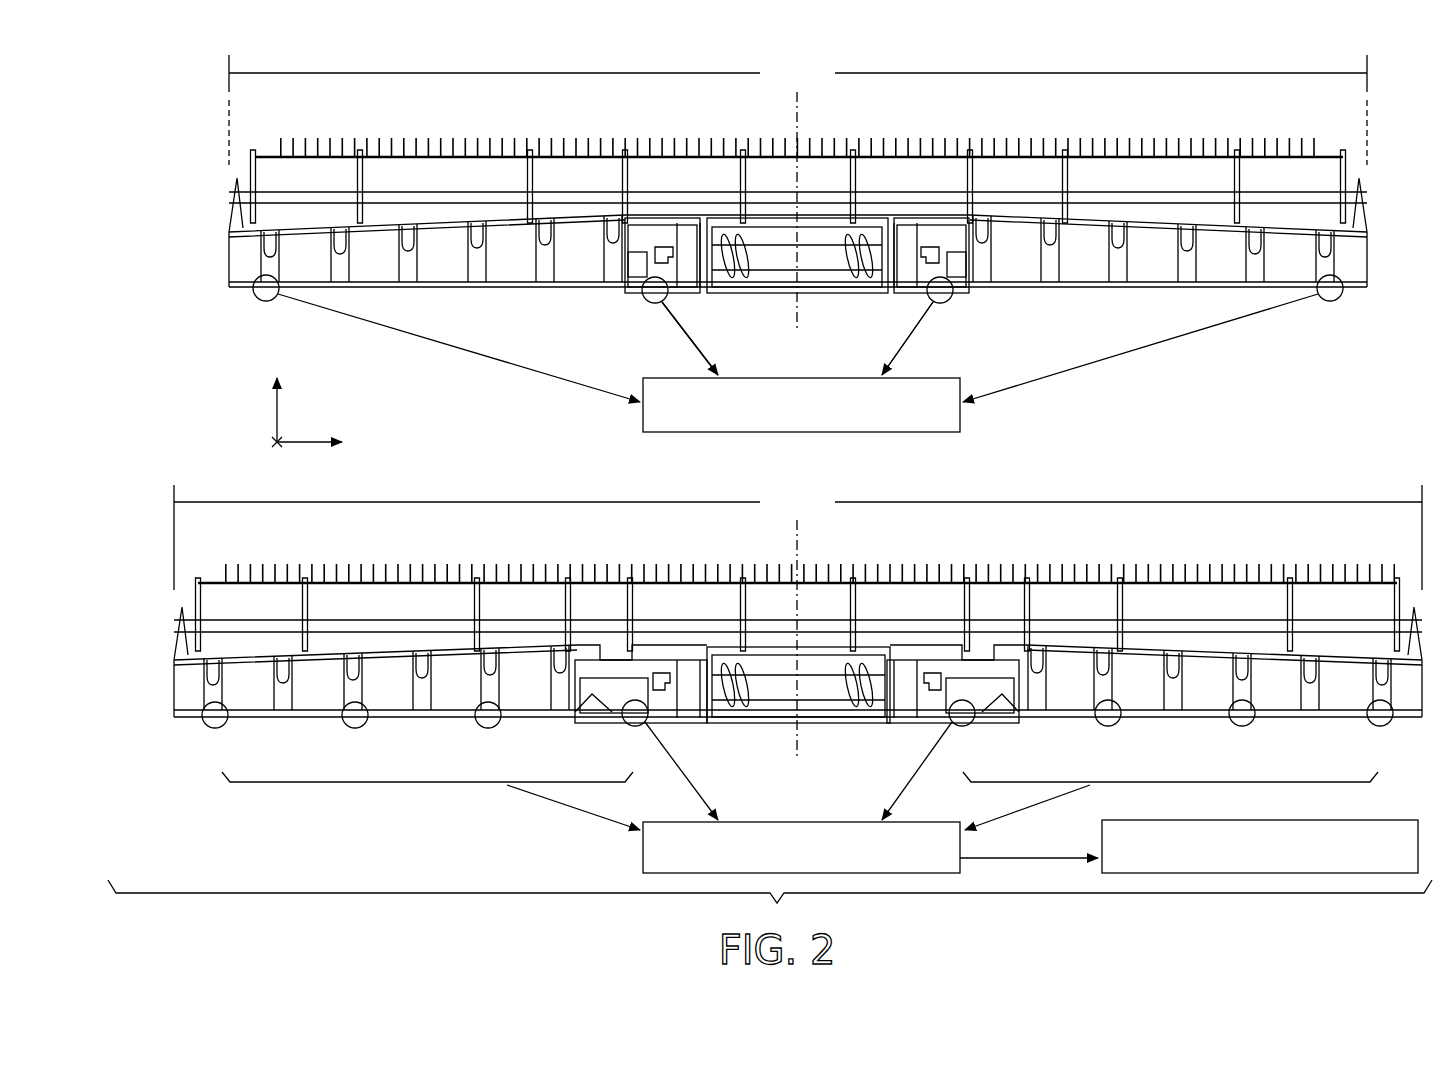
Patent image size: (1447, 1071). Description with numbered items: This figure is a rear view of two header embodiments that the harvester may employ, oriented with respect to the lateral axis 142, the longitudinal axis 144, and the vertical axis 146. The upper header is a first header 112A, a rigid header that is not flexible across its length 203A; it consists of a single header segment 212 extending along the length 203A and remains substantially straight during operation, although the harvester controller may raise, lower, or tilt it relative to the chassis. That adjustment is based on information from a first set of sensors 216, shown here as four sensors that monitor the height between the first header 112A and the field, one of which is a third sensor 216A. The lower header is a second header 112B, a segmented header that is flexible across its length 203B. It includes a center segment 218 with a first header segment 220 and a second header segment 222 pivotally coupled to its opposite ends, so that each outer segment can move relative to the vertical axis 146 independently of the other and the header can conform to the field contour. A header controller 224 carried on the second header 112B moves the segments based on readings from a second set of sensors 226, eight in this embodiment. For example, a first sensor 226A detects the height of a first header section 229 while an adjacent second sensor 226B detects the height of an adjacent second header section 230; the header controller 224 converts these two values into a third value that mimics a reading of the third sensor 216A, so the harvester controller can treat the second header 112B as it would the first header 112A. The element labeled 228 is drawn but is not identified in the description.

The first header 112A is at (1395, 115).
The second header 112B is at (1395, 487).
The lateral axis 142 is at (272, 442).
The longitudinal axis 144 is at (305, 445).
The vertical axis 146 is at (277, 412).
The length of first header 203A is at (798, 110).
The length of second header 203B is at (798, 537).
The single header segment 212 is at (1040, 125).
The first set of sensors 216 is at (643, 300).
The third sensor 216A is at (262, 295).
The center segment 218 is at (870, 552).
The first header segment 220 is at (1082, 552).
The second header segment 222 is at (278, 552).
The header controller 224 is at (800, 822).
The second set of sensors 226 is at (630, 725).
The first sensor 226A is at (225, 710).
The second sensor 226B is at (360, 712).
The frame bottom 228 is at (168, 712).
The first header section 229 is at (210, 732).
The second header section 230 is at (358, 733).